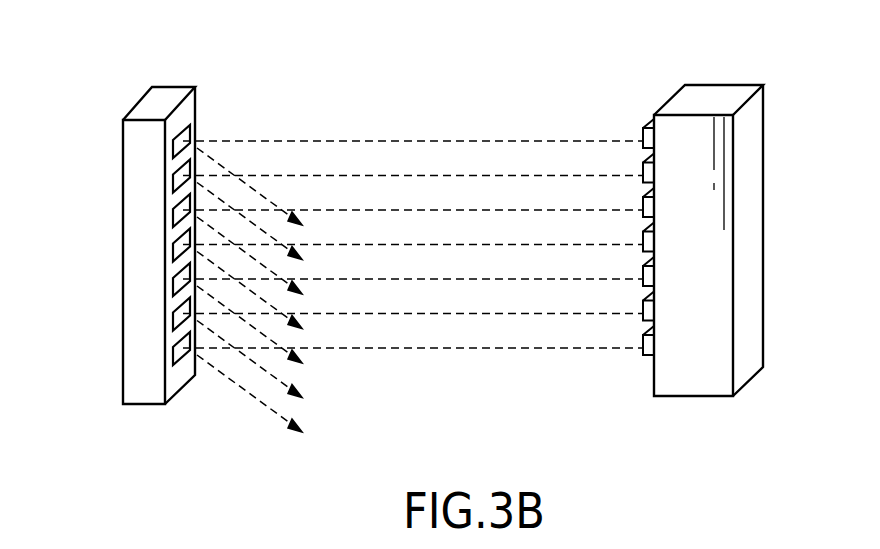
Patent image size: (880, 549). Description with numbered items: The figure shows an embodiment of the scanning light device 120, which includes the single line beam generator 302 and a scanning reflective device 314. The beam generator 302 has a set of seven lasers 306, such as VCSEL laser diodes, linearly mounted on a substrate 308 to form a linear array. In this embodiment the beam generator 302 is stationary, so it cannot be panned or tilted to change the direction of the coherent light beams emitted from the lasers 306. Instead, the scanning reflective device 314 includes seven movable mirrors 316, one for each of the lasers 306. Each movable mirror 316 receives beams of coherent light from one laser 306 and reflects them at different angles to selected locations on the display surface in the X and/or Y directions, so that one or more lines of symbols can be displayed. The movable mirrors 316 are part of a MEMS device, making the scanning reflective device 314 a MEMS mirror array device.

The scanning light device 120 is at (400, 86).
The single line beam generator 302 is at (734, 53).
The lasers 306 is at (643, 128).
The substrate 308 is at (752, 381).
The scanning reflective device 314 is at (145, 405).
The movable mirrors 316 is at (173, 158).